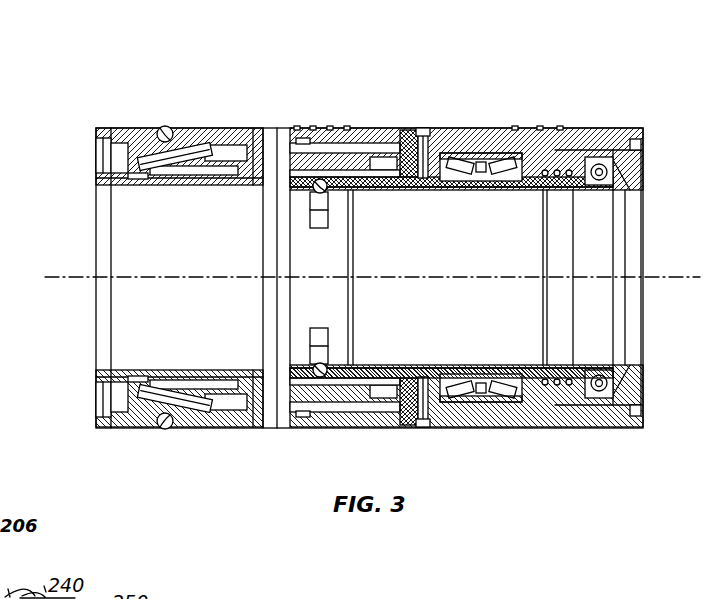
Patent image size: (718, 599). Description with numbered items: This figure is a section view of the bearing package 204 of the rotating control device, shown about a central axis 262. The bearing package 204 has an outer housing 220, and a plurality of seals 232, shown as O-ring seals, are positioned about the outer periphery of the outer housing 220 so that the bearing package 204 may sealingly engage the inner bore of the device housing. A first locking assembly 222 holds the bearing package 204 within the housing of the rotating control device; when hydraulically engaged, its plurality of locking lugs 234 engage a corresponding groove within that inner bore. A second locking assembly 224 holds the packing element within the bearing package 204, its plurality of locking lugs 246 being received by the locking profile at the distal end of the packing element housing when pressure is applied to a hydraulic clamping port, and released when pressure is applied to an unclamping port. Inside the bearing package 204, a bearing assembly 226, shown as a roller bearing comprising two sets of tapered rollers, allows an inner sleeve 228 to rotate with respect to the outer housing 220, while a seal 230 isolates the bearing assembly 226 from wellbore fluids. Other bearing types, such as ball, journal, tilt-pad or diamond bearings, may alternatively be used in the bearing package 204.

The bearing package 204 is at (504, 80).
The outer housing 220 is at (474, 428).
The first locking assembly 222 is at (250, 436).
The second locking assembly 224 is at (322, 346).
The bearing assembly 226 is at (522, 192).
The inner sleeve 228 is at (435, 368).
The seal 230 is at (605, 184).
The seals 232 is at (297, 127).
The locking lugs 234 is at (166, 126).
The locking lugs 246 is at (324, 192).
The central axis 262 is at (64, 277).